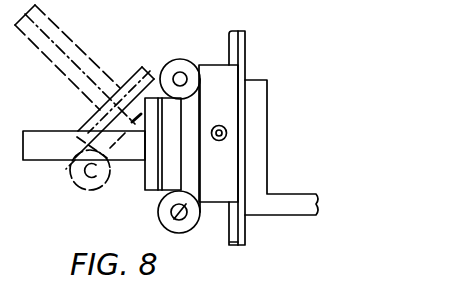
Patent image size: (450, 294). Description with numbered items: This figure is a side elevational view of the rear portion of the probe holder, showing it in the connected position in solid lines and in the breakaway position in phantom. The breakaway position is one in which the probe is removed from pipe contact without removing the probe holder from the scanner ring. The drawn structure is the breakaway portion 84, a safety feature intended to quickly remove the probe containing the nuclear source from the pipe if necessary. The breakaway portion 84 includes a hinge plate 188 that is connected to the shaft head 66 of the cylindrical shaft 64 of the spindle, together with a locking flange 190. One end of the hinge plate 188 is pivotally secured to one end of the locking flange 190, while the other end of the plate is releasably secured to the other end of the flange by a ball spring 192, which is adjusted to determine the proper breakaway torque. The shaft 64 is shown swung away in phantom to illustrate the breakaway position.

The cylindrical shaft 64 is at (105, 48).
The shaft head 66 is at (134, 64).
The breakaway portion 84 is at (197, 229).
The hinge plate 188 is at (164, 172).
The locking flange 190 is at (193, 117).
The ball spring 192 is at (169, 228).